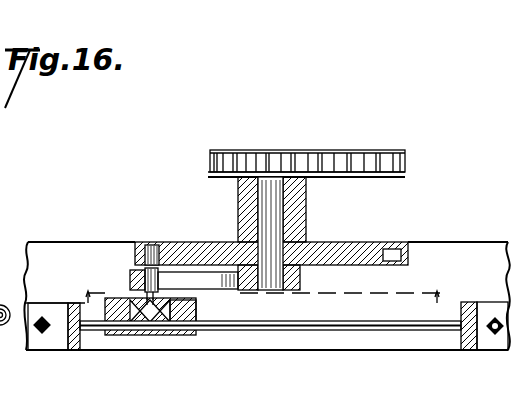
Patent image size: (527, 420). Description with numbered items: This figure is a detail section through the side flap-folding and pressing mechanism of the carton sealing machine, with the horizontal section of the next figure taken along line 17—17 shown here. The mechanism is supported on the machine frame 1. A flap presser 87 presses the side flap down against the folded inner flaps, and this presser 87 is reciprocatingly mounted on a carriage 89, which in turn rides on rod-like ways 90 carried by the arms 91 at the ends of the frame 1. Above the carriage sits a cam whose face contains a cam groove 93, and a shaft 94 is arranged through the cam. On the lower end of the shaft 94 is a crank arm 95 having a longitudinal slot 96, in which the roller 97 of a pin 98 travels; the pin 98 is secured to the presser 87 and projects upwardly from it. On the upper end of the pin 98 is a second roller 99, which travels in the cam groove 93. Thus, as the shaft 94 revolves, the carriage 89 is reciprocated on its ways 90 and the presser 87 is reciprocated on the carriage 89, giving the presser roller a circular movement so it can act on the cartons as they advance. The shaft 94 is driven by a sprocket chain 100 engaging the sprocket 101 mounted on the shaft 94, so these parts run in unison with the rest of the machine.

The frame 1 is at (452, 241).
The section line 17— 17 is at (267, 307).
The flap presser 87 is at (147, 300).
The carriage 89 is at (128, 306).
The rod-like ways 90 is at (322, 333).
The arms 91 is at (60, 352).
The cam groove 93 is at (400, 246).
The shaft 94 is at (270, 232).
The crank arm 95 is at (175, 272).
The longitudinal slot 96 is at (218, 284).
The roller 97 is at (140, 273).
The pin 98 is at (177, 302).
The roller 99 is at (148, 256).
The sprocket chain 100 is at (306, 146).
The sprocket 101 is at (258, 163).